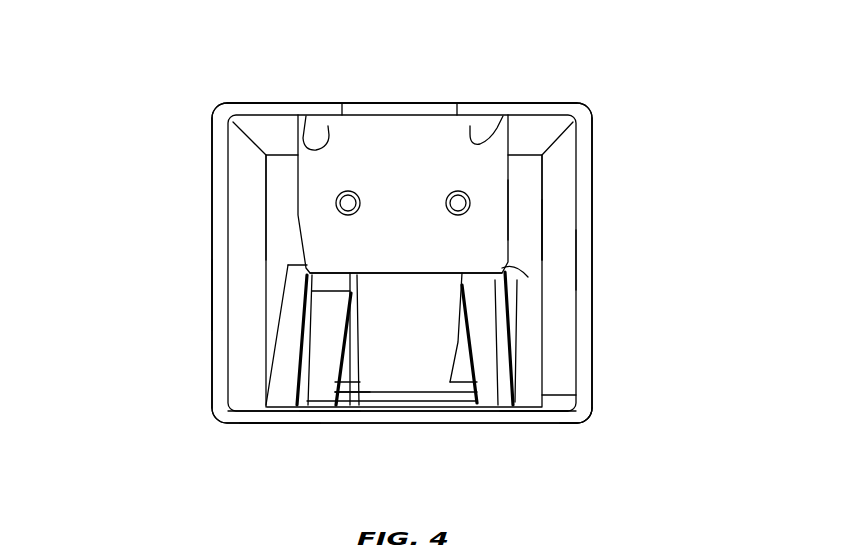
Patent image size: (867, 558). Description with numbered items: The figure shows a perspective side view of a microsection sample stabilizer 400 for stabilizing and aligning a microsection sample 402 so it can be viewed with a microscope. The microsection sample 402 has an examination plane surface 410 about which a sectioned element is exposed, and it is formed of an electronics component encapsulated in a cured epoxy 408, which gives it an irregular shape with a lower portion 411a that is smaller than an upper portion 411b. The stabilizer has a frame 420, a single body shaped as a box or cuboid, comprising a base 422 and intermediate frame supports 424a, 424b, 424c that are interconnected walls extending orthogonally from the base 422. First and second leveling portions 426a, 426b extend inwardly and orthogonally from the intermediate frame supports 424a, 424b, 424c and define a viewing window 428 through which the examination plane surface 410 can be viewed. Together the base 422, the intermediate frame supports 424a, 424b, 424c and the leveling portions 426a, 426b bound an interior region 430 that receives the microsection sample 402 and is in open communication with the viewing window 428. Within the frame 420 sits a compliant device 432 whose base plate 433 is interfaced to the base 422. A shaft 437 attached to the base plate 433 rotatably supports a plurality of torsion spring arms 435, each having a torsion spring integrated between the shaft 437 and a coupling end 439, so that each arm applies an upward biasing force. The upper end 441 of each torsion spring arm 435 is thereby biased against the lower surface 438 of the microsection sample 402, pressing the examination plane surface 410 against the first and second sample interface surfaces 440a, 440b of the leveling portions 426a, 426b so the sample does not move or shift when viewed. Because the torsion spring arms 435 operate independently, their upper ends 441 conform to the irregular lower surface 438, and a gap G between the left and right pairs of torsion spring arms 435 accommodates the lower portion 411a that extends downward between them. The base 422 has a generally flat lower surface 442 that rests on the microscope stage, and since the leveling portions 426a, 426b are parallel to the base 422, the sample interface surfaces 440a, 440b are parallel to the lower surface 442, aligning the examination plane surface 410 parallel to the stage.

The microsection sample stabilizer 400 is at (188, 70).
The microsection sample 402 is at (272, 190).
The cured epoxy 408 is at (300, 215).
The examination plane surface 410 is at (382, 104).
The lower portion 411a is at (441, 380).
The upper portion 411b is at (497, 206).
The frame 420 is at (143, 313).
The base 422 is at (593, 410).
The intermediate frame support 424a is at (212, 292).
The intermediate frame support 424b is at (565, 252).
The intermediate frame support 424c is at (530, 228).
The first leveling portion 426a is at (274, 113).
The second leveling portion 426b is at (548, 112).
The viewing window 428 is at (414, 95).
The interior region 430 is at (530, 176).
The compliant device 432 is at (533, 428).
The base plate 433 is at (335, 437).
The torsion spring arm 435 is at (490, 362).
The shaft 437 is at (560, 403).
The lower surface 438 is at (424, 282).
The coupling end 439 is at (527, 413).
The first sample interface surface 440a is at (306, 116).
The second sample interface surface 440b is at (503, 116).
The upper end 441 is at (478, 287).
The lower surface 442 is at (273, 435).
The gap G is at (347, 395).